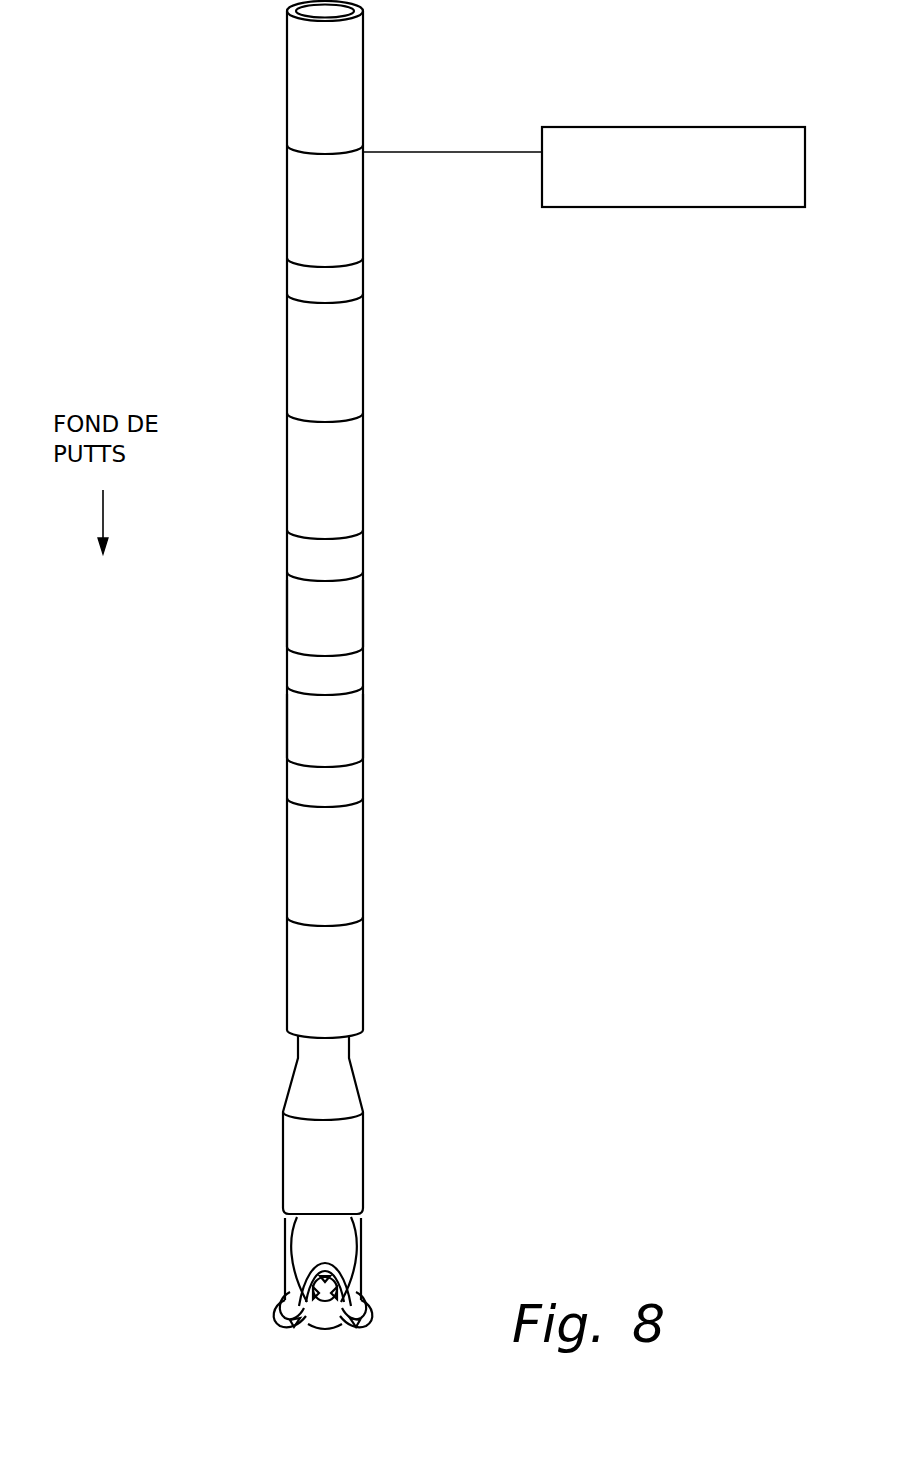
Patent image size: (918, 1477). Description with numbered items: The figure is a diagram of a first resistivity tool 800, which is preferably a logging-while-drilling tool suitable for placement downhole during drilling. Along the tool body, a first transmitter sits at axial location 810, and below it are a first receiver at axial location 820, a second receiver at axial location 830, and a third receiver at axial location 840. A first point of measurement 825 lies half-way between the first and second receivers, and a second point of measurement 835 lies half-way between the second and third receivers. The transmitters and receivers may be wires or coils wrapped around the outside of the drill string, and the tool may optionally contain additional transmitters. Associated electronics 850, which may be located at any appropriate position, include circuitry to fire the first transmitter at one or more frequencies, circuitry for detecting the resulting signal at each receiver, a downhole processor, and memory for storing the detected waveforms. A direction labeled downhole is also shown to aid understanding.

The resistivity tool 800 is at (158, 152).
The axial location of first transmitter T1 810 is at (287, 275).
The axial location of first receiver R1 820 is at (287, 548).
The first point of measurement 825 is at (287, 605).
The axial location of second receiver R2 830 is at (287, 660).
The second point of measurement 835 is at (287, 717).
The axial location of third receiver R3 840 is at (287, 772).
The associated electronics 850 is at (808, 152).